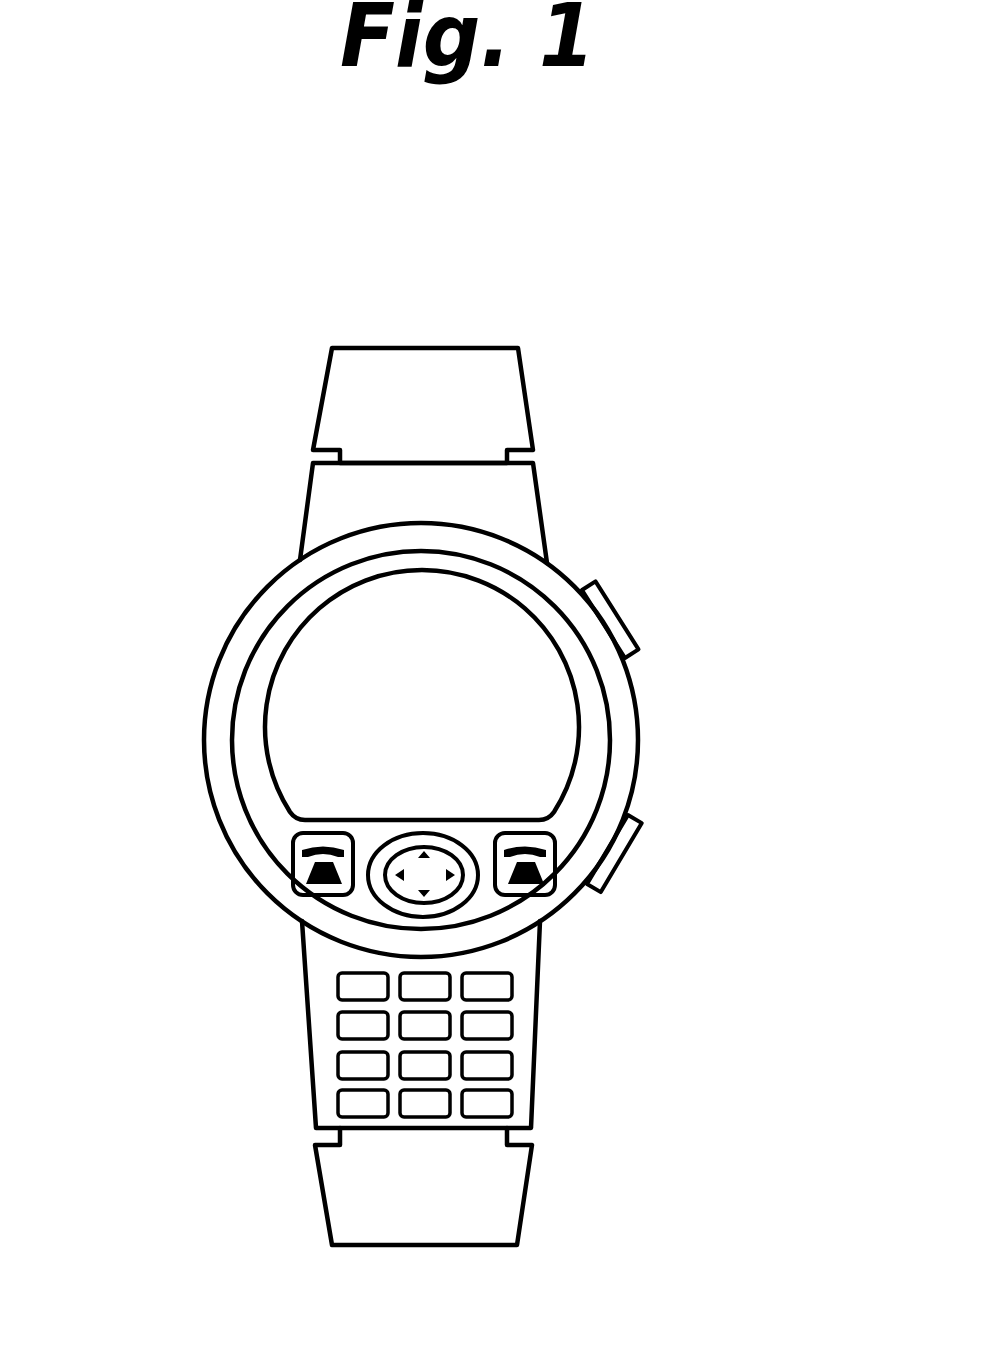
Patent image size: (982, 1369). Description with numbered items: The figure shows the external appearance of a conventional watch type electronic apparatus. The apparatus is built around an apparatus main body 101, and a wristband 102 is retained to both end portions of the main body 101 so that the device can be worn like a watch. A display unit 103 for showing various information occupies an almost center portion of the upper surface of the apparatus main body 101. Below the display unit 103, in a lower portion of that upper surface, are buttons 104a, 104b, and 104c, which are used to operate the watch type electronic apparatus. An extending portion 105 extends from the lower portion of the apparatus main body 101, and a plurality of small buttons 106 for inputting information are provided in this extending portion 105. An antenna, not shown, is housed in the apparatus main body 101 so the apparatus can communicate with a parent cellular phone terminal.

The apparatus main body 101 is at (630, 726).
The wristband 102 is at (438, 357).
The display unit 103 is at (332, 682).
The button 104a is at (547, 870).
The button 104b is at (458, 887).
The button 104c is at (297, 897).
The extending portion 105 is at (533, 1068).
The small buttons 106 is at (338, 1072).